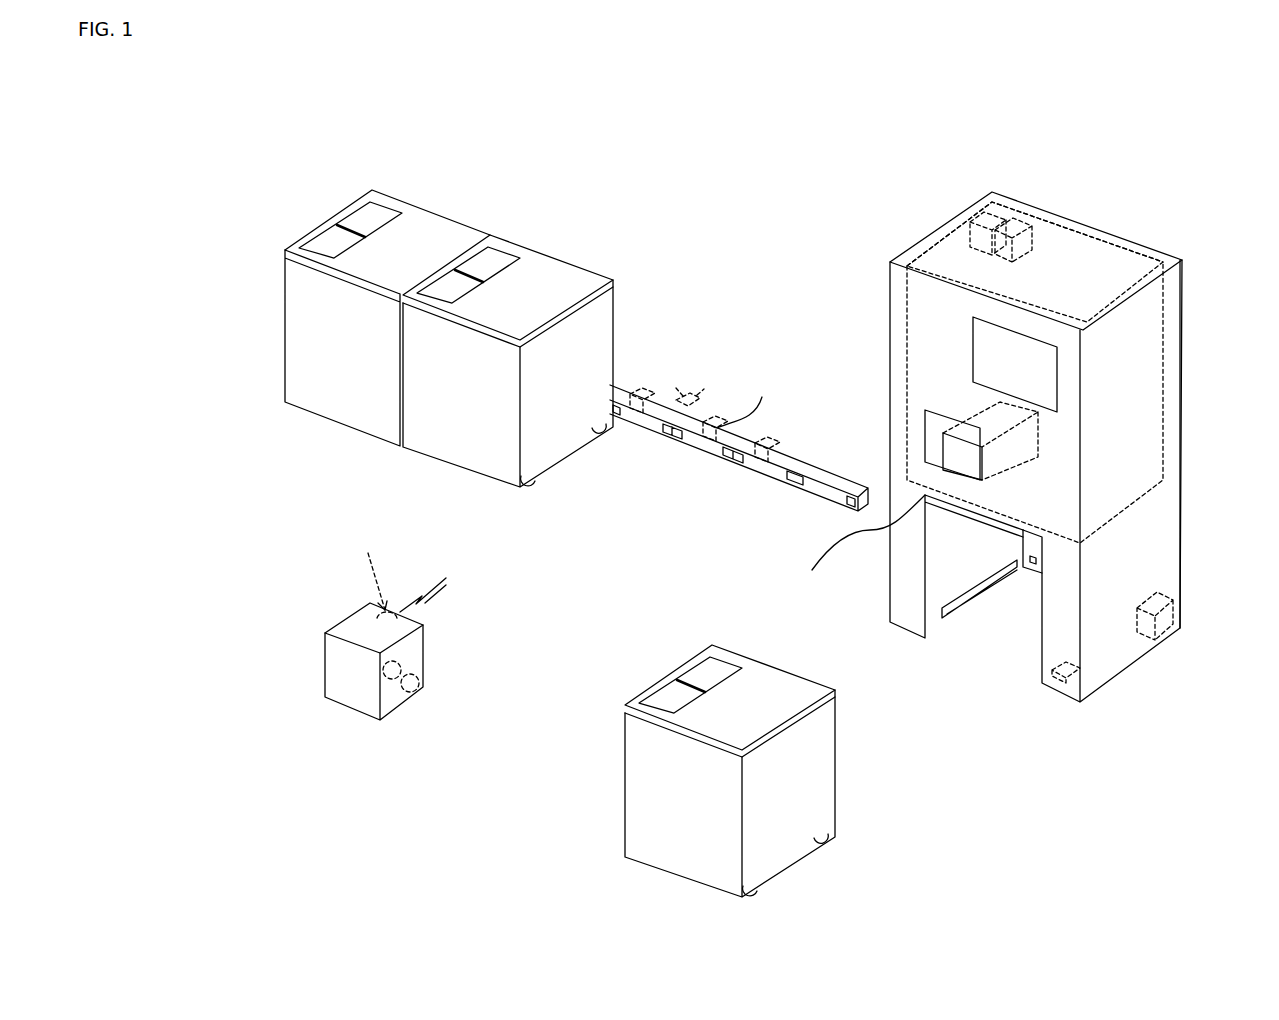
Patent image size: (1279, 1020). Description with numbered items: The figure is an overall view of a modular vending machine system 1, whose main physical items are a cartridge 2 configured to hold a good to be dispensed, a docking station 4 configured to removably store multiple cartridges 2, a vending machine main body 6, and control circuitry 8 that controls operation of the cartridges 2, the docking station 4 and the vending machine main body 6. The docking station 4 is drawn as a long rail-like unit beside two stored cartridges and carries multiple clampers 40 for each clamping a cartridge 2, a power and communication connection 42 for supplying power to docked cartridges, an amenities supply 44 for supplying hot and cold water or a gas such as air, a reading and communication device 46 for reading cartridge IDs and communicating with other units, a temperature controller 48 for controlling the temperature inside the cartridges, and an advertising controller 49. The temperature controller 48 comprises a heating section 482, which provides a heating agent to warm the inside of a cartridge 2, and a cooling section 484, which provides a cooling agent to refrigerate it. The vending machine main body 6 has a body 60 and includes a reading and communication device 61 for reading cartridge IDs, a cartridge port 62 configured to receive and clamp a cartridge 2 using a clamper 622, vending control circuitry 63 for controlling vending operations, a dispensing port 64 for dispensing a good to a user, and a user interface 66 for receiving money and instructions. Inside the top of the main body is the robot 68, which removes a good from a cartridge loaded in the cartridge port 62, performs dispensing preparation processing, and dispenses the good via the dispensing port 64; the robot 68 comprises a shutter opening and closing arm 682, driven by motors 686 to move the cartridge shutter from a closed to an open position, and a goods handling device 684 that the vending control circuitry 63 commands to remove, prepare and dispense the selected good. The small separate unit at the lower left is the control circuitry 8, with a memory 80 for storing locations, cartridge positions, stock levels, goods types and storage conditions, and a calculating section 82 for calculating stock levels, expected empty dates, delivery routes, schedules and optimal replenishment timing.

The modular vending machine system 1 is at (1163, 133).
The cartridge 2 is at (653, 634).
The docking station 4 is at (707, 262).
The clamper 40 is at (733, 460).
The power and communication connection 42 is at (790, 483).
The amenities supply 44 is at (787, 475).
The reading and communication device (ID reader) 46 is at (693, 407).
The temperature controller 48 is at (650, 327).
The heating section 482 is at (653, 407).
The cooling section 484 is at (635, 392).
The advertising controller 49 is at (763, 448).
The vending machine main body 6 is at (1160, 240).
The body 60 is at (1180, 375).
The reading and communication device (ID reader) 61 is at (1078, 672).
The cartridge port 62 is at (987, 655).
The clamper 622 is at (1033, 560).
The vending control circuitry 63 is at (1175, 610).
The dispensing port 64 is at (923, 423).
The user interface 66 is at (1087, 380).
The robot (mechanism, shutter opening mechanism) 68 is at (818, 172).
The shutter opening and closing arm 682 is at (968, 420).
The goods handling device 684 is at (942, 233).
The motor 686 is at (972, 207).
The control circuitry 8 is at (348, 594).
The memory 80 is at (393, 665).
The calculating section 82 is at (410, 680).